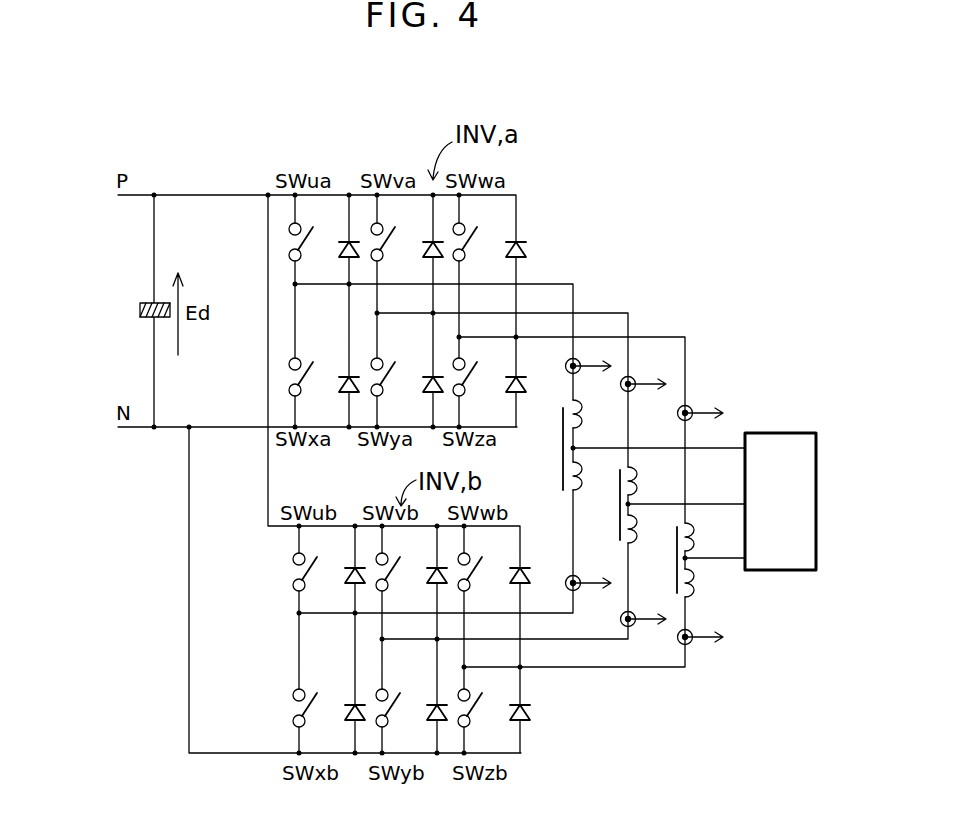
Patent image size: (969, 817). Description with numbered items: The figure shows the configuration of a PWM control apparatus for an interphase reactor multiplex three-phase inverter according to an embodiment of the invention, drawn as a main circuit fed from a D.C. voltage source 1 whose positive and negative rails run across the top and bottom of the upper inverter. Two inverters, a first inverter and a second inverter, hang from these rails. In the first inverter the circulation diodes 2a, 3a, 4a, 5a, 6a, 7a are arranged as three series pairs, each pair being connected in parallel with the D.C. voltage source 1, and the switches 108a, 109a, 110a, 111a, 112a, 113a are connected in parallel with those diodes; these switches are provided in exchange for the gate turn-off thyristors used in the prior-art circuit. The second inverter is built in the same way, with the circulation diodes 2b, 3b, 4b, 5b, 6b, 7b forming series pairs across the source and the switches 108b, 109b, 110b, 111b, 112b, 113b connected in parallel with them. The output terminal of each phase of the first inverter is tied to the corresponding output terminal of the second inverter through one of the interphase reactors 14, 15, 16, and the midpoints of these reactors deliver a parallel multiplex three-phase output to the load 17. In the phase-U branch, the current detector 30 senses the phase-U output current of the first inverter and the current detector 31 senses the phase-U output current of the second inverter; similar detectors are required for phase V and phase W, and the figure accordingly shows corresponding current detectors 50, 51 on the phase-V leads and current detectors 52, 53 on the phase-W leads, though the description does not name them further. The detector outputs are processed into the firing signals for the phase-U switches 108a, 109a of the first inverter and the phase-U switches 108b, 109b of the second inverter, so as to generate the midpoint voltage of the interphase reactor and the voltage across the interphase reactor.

The D.C. voltage source 1 is at (145, 300).
The circulation diode 2a is at (342, 248).
The circulation diode 3a is at (343, 383).
The circulation diode 4a is at (424, 248).
The circulation diode 5a is at (425, 383).
The circulation diode 6a is at (523, 251).
The circulation diode 7a is at (527, 382).
The switch 108a is at (312, 246).
The switch 109a is at (306, 354).
The switch 110a is at (394, 246).
The switch 111a is at (388, 354).
The switch 112a is at (476, 246).
The switch 113a is at (473, 384).
The circulation diode 2b is at (347, 578).
The circulation diode 3b is at (347, 714).
The circulation diode 4b is at (429, 578).
The circulation diode 5b is at (429, 714).
The circulation diode 6b is at (511, 578).
The circulation diode 7b is at (512, 717).
The switch 108b is at (316, 576).
The switch 109b is at (313, 709).
The switch 110b is at (399, 576).
The switch 111b is at (397, 709).
The switch 112b is at (481, 576).
The switch 113b is at (479, 709).
The interphase reactor 14 is at (560, 446).
The interphase reactor 15 is at (620, 511).
The interphase reactor 16 is at (676, 550).
The load 17 is at (781, 432).
The current detector 30 is at (577, 374).
The current detector 31 is at (578, 590).
The current detector 50 is at (628, 380).
The current detector 51 is at (634, 624).
The current detector 52 is at (684, 404).
The current detector 53 is at (690, 642).